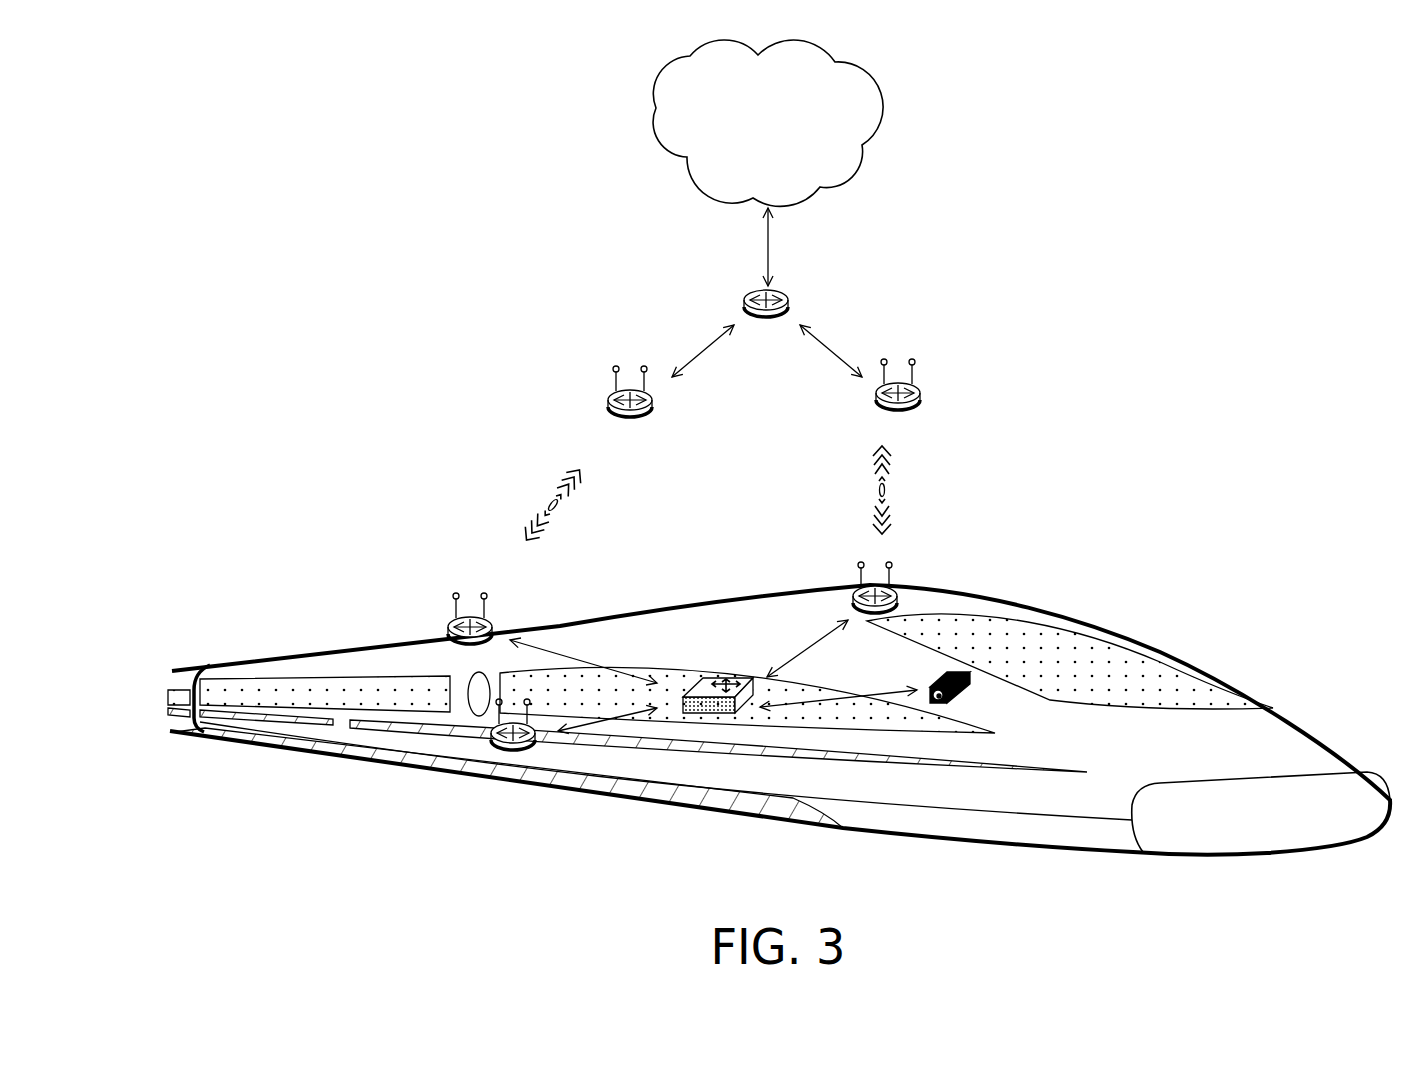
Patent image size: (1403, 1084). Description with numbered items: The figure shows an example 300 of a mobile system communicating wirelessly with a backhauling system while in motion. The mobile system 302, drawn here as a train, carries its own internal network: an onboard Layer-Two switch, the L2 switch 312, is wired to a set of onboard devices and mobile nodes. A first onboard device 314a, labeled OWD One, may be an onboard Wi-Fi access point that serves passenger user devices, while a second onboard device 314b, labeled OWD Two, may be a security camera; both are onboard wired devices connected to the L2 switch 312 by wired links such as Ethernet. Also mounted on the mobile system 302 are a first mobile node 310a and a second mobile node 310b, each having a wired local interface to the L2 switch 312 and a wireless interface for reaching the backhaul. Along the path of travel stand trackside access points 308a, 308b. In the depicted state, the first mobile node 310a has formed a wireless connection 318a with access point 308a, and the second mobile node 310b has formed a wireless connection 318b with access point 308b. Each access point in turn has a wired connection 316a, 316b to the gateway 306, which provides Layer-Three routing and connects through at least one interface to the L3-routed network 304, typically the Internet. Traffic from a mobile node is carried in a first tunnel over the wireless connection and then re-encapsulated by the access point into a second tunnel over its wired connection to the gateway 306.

The example of a mobile system communicating wirelessly 300 is at (1319, 122).
The mobile system 302 is at (1107, 620).
The L3-routed network 304 is at (749, 165).
The gateway (GW) 306 is at (790, 300).
The trackside access point 308a is at (921, 392).
The trackside access point 308b is at (607, 398).
The first mobile node (MN) 310a is at (898, 592).
The second mobile node (MN) 310b is at (450, 628).
The Layer-2 (L2) switch 312 is at (722, 675).
The onboard device (OWD 1) 314a is at (513, 747).
The onboard device (OWD 2) 314b is at (962, 703).
The connection between AP 308a and GW 316a is at (854, 337).
The connection between AP 308b and GW 316b is at (678, 337).
The wireless connection 318a is at (936, 490).
The wireless connection 318b is at (512, 491).